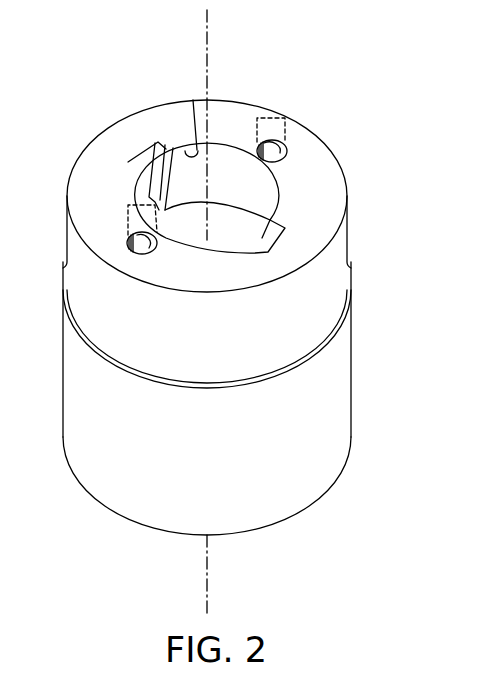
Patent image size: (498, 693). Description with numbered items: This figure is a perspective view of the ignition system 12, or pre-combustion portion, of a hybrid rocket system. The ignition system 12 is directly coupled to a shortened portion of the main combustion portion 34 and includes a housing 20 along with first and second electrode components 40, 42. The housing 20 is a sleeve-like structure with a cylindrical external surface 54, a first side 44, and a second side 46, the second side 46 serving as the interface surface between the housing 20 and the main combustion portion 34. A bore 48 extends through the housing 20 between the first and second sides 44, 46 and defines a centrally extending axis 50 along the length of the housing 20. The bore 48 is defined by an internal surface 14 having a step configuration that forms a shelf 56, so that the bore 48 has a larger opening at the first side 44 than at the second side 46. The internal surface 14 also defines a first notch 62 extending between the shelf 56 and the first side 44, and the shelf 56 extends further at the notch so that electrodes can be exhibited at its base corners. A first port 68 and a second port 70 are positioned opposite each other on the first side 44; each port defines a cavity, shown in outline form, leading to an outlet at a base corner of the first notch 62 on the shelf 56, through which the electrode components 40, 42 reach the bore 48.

The ignition system 12 is at (337, 108).
The internal surface 14 is at (193, 100).
The housing 20 is at (218, 244).
The main combustion portion 34 is at (330, 463).
The first electrode component 40 is at (265, 118).
The second electrode component 42 is at (127, 210).
The first side 44 is at (313, 167).
The second side 46 is at (337, 330).
The bore 48 is at (253, 206).
The axis 50 is at (208, 55).
The external surface 54 is at (337, 248).
The shelf 56 is at (228, 213).
The first notch 62 is at (160, 142).
The first port 68 is at (287, 120).
The second port 70 is at (156, 244).